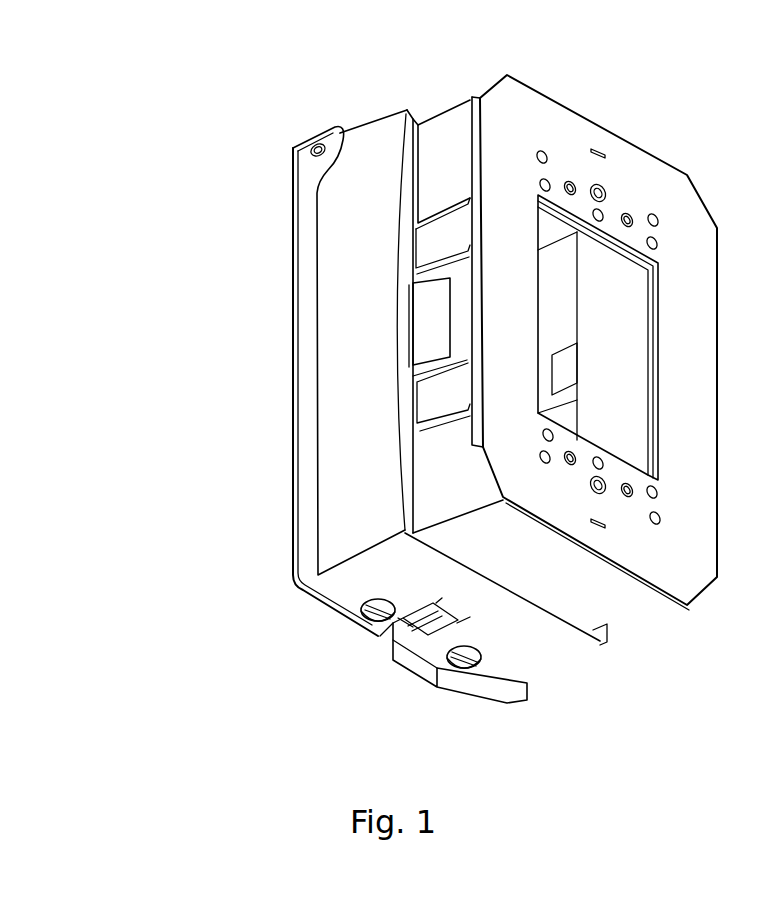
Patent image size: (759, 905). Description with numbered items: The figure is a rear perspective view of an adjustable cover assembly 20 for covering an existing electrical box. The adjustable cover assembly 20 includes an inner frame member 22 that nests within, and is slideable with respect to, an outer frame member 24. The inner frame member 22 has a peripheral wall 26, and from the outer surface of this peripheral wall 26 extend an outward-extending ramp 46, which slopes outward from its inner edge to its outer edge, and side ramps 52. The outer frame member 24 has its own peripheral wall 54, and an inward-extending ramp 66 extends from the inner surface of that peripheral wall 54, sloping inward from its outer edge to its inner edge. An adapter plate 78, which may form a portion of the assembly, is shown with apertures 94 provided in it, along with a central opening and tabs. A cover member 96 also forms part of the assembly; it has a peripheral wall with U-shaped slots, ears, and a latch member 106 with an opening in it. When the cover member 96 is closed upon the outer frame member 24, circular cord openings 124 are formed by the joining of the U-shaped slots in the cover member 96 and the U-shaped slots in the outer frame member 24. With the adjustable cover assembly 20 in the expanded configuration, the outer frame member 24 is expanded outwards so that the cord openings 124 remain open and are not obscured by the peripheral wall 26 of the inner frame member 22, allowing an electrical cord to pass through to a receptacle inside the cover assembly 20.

The adjustable cover assembly 20 is at (188, 209).
The inner frame member 22 is at (443, 107).
The outer frame member 24 is at (374, 108).
The peripheral wall 26 is at (462, 181).
The outward-extending ramp 46 is at (447, 335).
The side ramps 52 is at (462, 248).
The peripheral wall 54 is at (372, 234).
The inward-extending ramp 66 is at (563, 372).
The adapter plate 78 is at (590, 125).
The apertures 94 is at (655, 215).
The cover member 96 is at (302, 318).
The latch member 106 is at (412, 672).
The circular cord openings 124 is at (386, 597).